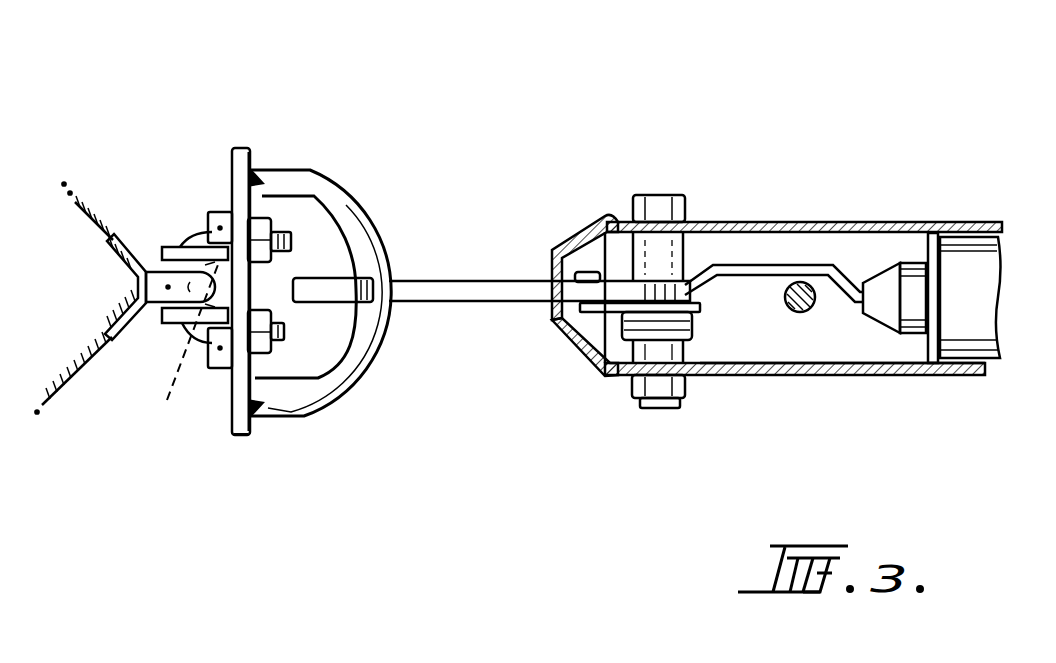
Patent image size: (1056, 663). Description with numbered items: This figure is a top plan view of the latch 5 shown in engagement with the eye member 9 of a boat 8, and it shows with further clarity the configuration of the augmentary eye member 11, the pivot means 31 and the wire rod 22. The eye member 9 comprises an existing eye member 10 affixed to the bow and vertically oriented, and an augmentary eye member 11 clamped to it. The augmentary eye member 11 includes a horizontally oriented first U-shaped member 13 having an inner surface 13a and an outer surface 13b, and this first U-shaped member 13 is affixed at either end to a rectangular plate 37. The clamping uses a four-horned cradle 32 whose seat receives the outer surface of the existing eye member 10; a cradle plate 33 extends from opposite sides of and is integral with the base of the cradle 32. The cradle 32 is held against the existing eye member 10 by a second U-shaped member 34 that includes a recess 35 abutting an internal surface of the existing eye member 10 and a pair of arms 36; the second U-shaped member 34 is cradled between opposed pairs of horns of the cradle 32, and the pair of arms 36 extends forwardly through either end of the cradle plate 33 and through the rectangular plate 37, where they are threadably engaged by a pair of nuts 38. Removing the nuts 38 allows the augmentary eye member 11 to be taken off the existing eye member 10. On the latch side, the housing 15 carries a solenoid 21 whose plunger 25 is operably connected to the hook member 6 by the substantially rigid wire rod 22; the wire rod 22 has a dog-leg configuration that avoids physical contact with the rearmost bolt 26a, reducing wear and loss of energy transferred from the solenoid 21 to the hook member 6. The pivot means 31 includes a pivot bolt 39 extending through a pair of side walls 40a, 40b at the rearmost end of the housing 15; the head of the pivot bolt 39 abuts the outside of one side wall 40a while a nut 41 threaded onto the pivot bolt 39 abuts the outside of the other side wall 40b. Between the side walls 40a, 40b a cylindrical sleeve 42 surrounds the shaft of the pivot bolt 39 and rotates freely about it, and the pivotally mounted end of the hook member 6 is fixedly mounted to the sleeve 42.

The latch 5 is at (757, 255).
The hook member 6 is at (488, 303).
The boat 8 is at (76, 292).
The eye member 9 is at (316, 268).
The existing eye member 10 is at (150, 314).
The augmentary eye member 11 is at (246, 138).
The first U-shaped member 13 is at (374, 228).
The inner surface 13a is at (327, 222).
The outer surface 13b is at (389, 236).
The housing 15 is at (855, 218).
The solenoid 21 is at (977, 268).
The wire rod 22 is at (781, 265).
The plunger 25 is at (913, 278).
The rearmost bolt 26a is at (805, 313).
The pivot means 31 is at (620, 396).
The four-horned cradle 32 is at (182, 250).
The cradle plate 33 is at (215, 370).
The second U-shaped member 34 is at (190, 238).
The recess 35 is at (176, 352).
The pair of arms 36 is at (395, 300).
The rectangular plate 37 is at (243, 438).
The pair of nuts 38 is at (258, 261).
The pivot bolt 39 is at (587, 235).
The side wall 40a is at (703, 222).
The side wall 40b is at (912, 378).
The nut 41 is at (686, 386).
The cylindrical sleeve 42 is at (640, 253).